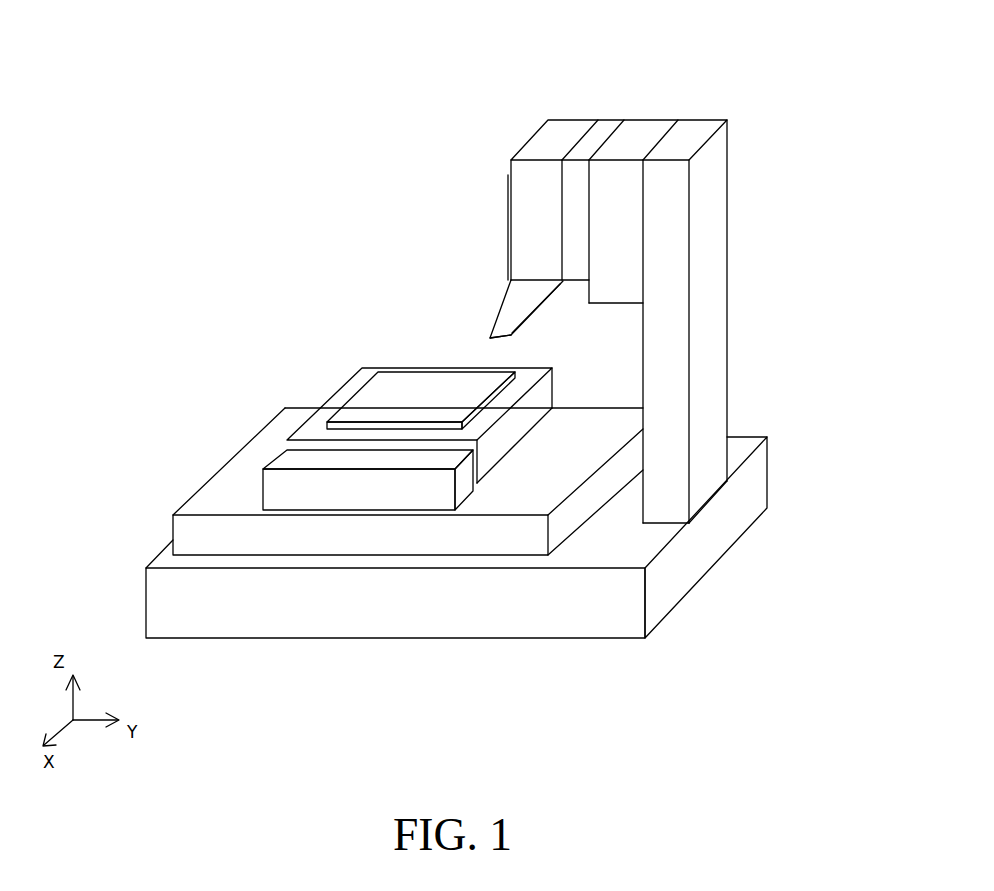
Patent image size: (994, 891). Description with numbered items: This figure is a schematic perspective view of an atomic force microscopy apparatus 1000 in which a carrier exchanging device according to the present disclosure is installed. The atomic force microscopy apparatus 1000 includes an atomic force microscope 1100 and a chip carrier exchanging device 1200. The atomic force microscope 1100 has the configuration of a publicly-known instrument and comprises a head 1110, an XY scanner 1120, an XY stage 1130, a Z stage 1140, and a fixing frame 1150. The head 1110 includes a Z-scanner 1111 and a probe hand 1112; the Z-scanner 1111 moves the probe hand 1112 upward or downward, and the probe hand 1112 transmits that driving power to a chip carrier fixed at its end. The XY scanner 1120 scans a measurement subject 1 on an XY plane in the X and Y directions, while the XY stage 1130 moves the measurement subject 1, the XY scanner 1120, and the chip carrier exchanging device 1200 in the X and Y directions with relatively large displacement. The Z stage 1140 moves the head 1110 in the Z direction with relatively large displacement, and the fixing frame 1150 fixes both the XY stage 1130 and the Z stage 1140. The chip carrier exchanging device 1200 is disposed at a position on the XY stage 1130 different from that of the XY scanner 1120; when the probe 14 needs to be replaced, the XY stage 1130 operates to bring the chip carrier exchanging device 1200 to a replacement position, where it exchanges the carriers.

The atomic force microscopy apparatus 1000 is at (145, 42).
The atomic force microscope 1100 is at (772, 227).
The head 1110 is at (528, 200).
The Z-scanner 1111 is at (533, 182).
The probe hand 1112 is at (508, 310).
The probe 14 is at (482, 342).
The Z stage 1140 is at (617, 180).
The XY scanner 1120 is at (340, 397).
The XY stage 1130 is at (218, 483).
The fixing frame 1150 is at (625, 625).
The chip carrier exchanging device 1200 is at (264, 456).
The measurement subject 1 is at (382, 388).